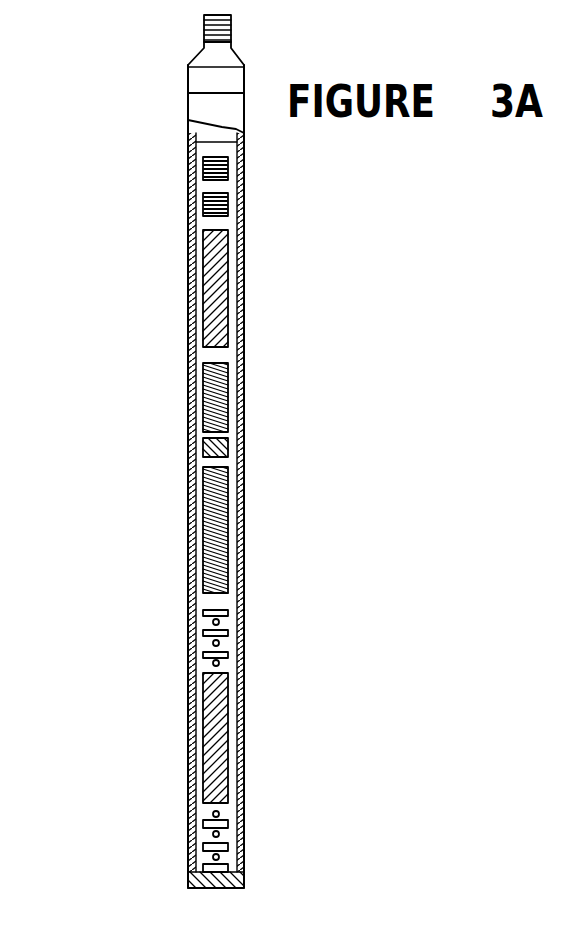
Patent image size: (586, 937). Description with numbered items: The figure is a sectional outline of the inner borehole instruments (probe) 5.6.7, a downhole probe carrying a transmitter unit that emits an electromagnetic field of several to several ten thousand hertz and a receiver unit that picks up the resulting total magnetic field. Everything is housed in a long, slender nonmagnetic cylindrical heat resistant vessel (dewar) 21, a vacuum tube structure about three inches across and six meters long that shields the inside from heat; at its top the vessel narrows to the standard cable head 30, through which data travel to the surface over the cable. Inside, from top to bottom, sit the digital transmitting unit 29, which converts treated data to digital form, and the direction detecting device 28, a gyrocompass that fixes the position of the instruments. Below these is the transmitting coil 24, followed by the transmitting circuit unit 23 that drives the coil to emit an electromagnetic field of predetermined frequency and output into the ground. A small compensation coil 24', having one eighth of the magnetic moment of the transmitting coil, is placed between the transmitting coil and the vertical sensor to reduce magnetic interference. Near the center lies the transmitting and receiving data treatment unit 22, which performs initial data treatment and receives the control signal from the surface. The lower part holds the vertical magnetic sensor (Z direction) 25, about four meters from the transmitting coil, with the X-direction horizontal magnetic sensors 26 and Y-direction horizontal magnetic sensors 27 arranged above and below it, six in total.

The inner borehole instruments (probe) 5.6.7 is at (168, 201).
The standard cable head 30 is at (237, 53).
The nonmagnetic cylindrical heat resistant vessel (dewar) 21 is at (244, 585).
The digital transmitting unit 29 is at (228, 160).
The direction detecting device 28 is at (228, 198).
The transmitting coil 24 is at (257, 288).
The transmitting circuit unit 23 is at (228, 378).
The compensation coil 24' is at (259, 438).
The transmitting and receiving data treatment unit 22 is at (228, 525).
The Y-direction horizontal magnetic sensors 27 is at (213, 623).
The X-direction horizontal magnetic sensors 26 is at (228, 613).
The vertical magnetic sensor (Z direction) 25 is at (203, 718).